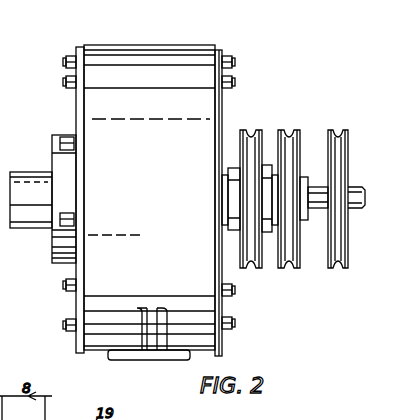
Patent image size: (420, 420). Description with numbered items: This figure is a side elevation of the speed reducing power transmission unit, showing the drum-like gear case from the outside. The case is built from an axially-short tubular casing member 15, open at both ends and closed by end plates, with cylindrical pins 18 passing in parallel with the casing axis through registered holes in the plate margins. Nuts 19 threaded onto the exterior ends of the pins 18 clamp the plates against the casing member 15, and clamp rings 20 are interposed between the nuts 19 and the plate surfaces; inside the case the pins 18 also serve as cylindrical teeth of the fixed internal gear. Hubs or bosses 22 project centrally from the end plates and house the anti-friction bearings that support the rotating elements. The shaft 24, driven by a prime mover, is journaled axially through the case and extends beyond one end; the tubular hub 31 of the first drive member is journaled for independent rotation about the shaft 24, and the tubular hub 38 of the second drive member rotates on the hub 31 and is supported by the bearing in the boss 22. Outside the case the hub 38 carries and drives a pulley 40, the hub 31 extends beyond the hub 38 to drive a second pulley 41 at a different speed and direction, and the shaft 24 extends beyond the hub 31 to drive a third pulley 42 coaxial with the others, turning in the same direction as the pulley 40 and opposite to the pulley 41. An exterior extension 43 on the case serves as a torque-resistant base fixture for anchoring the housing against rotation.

The tubular casing member 15 is at (149, 197).
The cylindrical pins 18 is at (234, 80).
The nuts 19 is at (76, 52).
The clamp rings 20 is at (84, 47).
The hubs or bosses 22 is at (55, 135).
The shaft 24 is at (355, 187).
The tubular hub 31 is at (304, 222).
The tubular hub 38 is at (265, 232).
The pulley 40 is at (248, 130).
The pulley 41 is at (290, 130).
The pulley 42 is at (330, 130).
The exterior extension or projection 43 is at (147, 356).